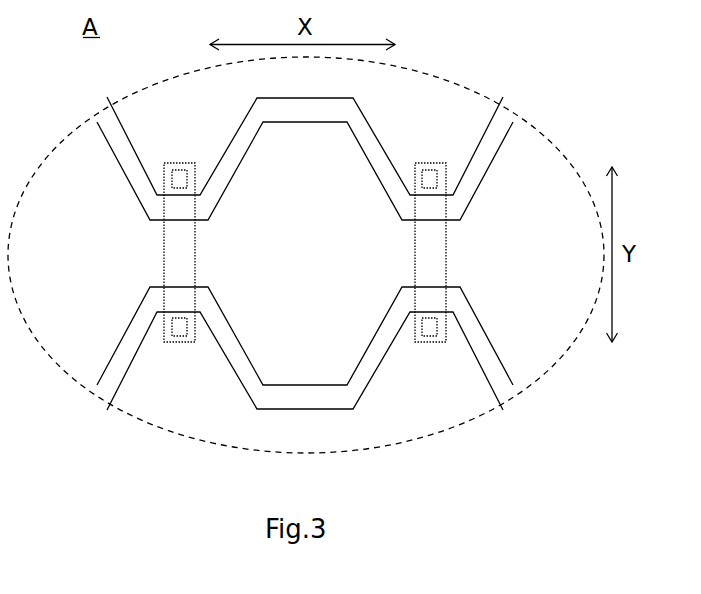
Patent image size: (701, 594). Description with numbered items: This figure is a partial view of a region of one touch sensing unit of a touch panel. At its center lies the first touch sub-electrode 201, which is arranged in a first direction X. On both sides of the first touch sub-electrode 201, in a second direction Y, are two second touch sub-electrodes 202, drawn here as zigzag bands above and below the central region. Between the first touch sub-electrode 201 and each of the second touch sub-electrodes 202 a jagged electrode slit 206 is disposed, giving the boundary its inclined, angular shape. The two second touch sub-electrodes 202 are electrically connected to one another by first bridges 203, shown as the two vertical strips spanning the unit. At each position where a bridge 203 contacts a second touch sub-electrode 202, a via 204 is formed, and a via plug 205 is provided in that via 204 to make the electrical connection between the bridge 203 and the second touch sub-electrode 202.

The first touch sub-electrode 201 is at (319, 250).
The second touch sub-electrode 202 is at (305, 252).
The first bridge 203 is at (180, 257).
The via 204 is at (178, 317).
The via plug 205 is at (180, 320).
The jagged electrode slit 206 is at (382, 155).